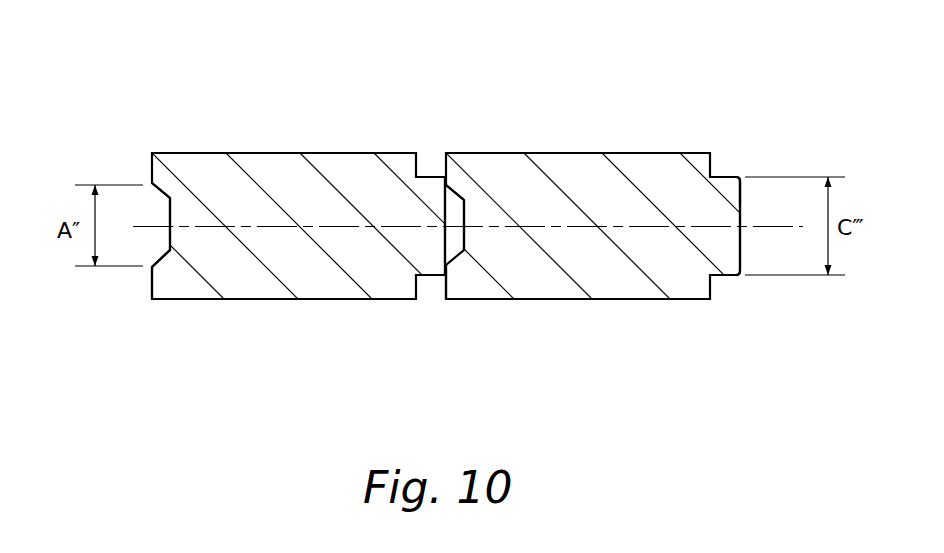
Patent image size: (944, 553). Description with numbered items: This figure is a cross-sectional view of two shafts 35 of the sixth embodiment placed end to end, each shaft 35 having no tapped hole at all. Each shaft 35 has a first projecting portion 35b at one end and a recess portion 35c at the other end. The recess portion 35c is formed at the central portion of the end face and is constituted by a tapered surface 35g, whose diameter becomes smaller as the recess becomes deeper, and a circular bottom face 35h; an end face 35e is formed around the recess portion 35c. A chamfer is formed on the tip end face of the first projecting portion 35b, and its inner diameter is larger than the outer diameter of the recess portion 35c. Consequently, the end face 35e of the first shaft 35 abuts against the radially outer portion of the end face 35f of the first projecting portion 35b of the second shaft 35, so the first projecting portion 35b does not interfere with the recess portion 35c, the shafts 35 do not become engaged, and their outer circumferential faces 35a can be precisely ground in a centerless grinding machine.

The shaft 35 is at (282, 112).
The outer circumferential face 35a is at (340, 151).
The first projecting portion 35b is at (425, 188).
The recess portion 35c is at (152, 247).
The end face 35e is at (151, 290).
The end face of the first projecting portion 35f is at (460, 194).
The tapered surface 35g is at (152, 197).
The circular bottom face 35h is at (172, 199).